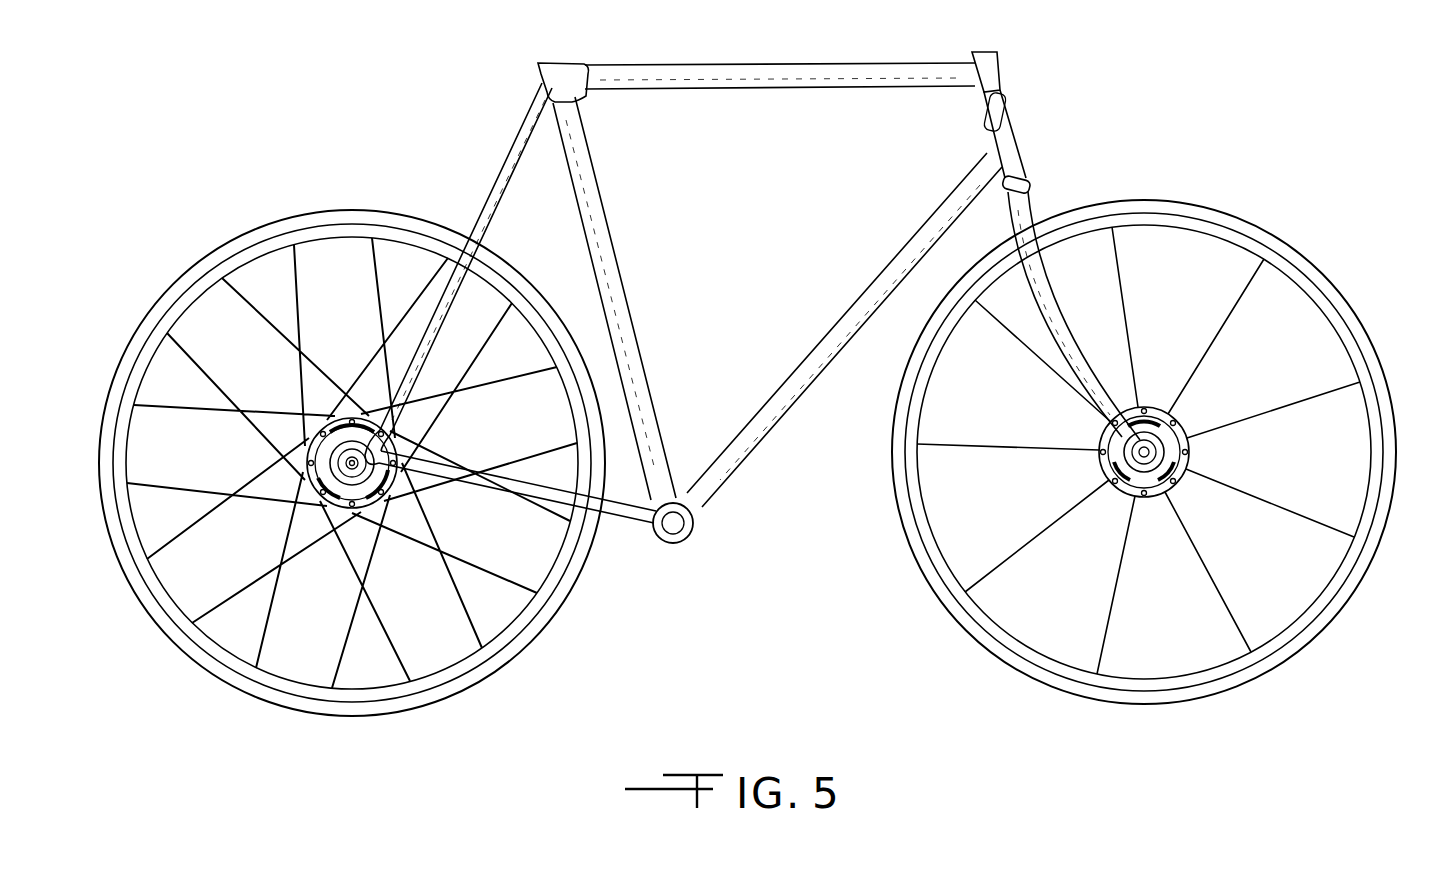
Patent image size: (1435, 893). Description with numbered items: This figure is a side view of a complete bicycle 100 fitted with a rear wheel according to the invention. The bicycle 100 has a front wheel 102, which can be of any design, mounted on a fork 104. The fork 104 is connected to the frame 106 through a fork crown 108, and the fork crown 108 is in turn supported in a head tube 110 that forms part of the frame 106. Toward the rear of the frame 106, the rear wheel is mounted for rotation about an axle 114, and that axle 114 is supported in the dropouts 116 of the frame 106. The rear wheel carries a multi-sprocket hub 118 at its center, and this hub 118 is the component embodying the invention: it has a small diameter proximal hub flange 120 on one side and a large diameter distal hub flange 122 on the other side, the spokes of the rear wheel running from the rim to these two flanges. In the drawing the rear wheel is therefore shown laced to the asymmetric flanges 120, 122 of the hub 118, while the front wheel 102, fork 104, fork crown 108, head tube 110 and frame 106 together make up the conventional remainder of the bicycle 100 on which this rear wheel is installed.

The bicycle 100 is at (1107, 108).
The front wheel 102 is at (1233, 212).
The fork 104 is at (1075, 353).
The frame 106 is at (770, 66).
The fork crown 108 is at (1030, 172).
The head tube 110 is at (1005, 105).
The axle 114 is at (427, 422).
The dropouts 116 is at (300, 440).
The multi-sprocket hub 118 is at (287, 505).
The small diameter proximal hub flange 120 is at (350, 517).
The large diameter distal hub flange 122 is at (393, 507).